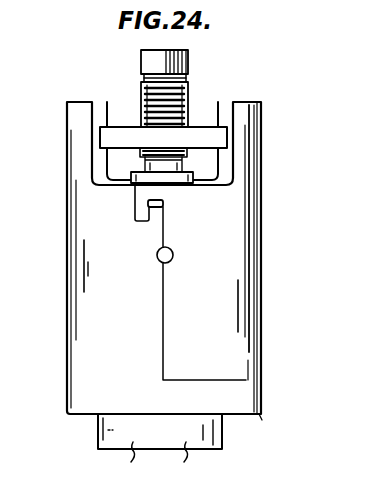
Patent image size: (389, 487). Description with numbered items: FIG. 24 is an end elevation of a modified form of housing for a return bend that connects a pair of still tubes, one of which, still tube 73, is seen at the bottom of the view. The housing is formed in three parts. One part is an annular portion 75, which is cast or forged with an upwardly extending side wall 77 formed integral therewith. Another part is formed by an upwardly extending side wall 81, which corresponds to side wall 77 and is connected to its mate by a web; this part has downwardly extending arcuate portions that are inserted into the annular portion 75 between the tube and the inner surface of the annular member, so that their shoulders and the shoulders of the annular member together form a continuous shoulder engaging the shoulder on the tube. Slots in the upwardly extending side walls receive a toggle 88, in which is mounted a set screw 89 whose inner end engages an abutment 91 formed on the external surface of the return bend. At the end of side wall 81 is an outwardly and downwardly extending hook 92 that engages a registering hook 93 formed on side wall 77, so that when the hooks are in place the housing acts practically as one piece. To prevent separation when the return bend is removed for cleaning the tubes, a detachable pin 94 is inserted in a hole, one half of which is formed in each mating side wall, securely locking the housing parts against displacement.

The still tube 73 is at (160, 438).
The annular portion 75 is at (0, 249).
The side wall 77 is at (85, 280).
The side wall 81 is at (248, 236).
The toggle 88 is at (163, 138).
The set screw 89 is at (192, 75).
The abutment 91 is at (189, 182).
The hook 92 is at (142, 206).
The registering hook 93 is at (157, 214).
The detachable pin 94 is at (158, 263).